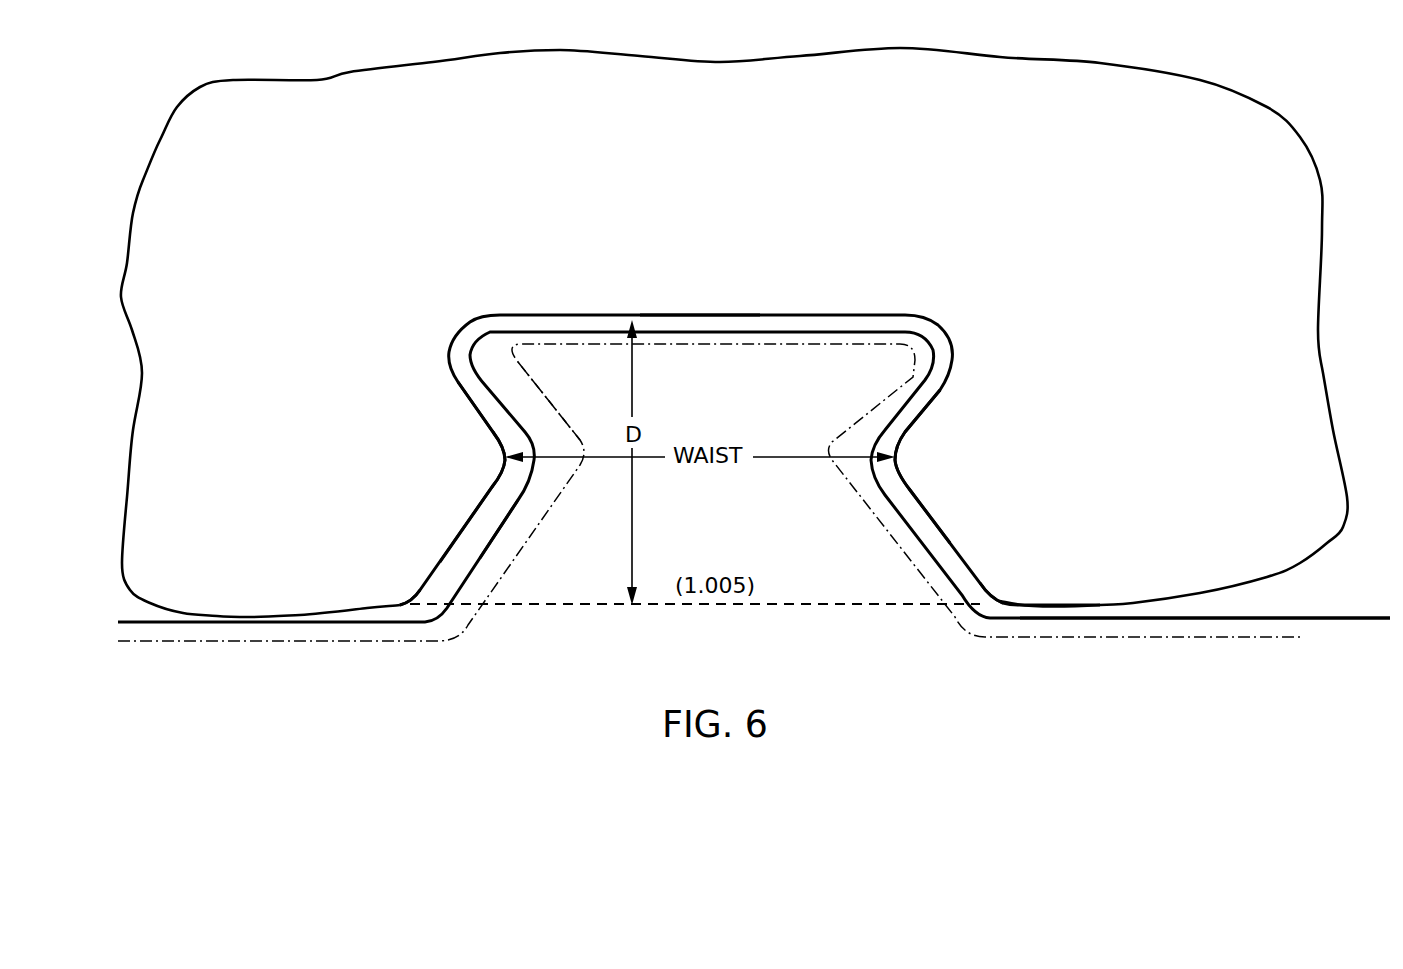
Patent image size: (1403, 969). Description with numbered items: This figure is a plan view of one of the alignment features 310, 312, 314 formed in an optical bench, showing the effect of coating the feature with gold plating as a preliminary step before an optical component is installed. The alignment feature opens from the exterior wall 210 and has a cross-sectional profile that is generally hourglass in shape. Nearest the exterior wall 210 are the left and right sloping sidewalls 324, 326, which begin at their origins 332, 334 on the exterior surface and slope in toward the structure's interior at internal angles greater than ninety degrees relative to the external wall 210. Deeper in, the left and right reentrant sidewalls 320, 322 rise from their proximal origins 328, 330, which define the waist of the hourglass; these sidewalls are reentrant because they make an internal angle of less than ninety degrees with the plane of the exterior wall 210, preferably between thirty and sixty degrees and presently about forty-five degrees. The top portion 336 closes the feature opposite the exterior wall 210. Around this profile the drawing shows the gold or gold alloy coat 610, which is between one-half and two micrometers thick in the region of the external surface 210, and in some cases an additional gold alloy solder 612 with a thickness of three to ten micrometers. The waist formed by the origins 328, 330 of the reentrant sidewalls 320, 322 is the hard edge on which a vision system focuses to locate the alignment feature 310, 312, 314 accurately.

The exterior wall 210 is at (1105, 607).
The alignment feature 310 is at (754, 516).
The alignment feature 312 is at (754, 516).
The alignment feature 314 is at (843, 672).
The left reentrant sidewall 320 is at (478, 410).
The right reentrant sidewall 322 is at (933, 397).
The left sloping sidewall 324 is at (503, 483).
The right sloping sidewall 326 is at (927, 513).
The proximal origin of left reentrant sidewall 328 is at (500, 440).
The proximal origin of right reentrant sidewall 330 is at (893, 457).
The origin of left sloping sidewall 332 is at (403, 603).
The origin of right sloping sidewall 334 is at (987, 588).
The top portion 336 is at (692, 315).
The gold/gold alloy coat 610 is at (455, 558).
The gold alloy solder 612 is at (503, 532).